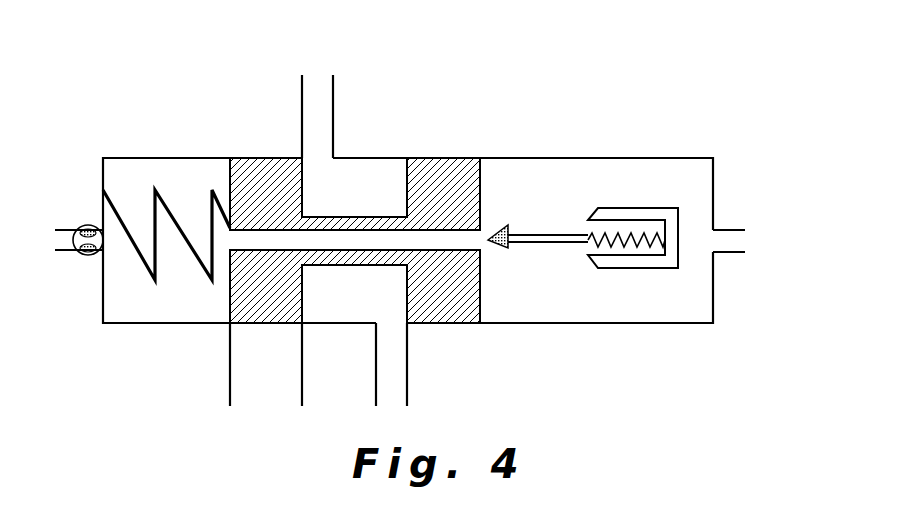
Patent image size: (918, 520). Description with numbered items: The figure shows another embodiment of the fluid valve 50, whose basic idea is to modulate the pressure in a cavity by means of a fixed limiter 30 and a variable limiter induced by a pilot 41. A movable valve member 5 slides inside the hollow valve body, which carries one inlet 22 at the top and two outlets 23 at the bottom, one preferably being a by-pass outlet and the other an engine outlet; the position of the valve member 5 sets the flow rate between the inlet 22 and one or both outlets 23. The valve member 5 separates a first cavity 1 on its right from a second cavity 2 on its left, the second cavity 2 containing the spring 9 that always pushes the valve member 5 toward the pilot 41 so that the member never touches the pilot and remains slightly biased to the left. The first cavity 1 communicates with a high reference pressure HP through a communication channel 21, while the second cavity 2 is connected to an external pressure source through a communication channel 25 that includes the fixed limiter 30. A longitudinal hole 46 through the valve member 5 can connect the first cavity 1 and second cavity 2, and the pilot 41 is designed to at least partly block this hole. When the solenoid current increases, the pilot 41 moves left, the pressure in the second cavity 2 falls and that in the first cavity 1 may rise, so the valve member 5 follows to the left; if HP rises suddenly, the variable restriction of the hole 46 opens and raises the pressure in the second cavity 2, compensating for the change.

The fluid valve 50 is at (206, 92).
The valve member 5 is at (453, 178).
The longitudinal hole 46 is at (417, 240).
The inlet 22 is at (317, 102).
The outlets 23 is at (318, 376).
The second cavity 2 is at (187, 294).
The first cavity 1 is at (545, 288).
The spring 9 is at (137, 250).
The pilot 41 is at (530, 235).
The communication channel 21 is at (727, 240).
The communication channel 25 is at (65, 238).
The fixed limiter 30 is at (88, 257).